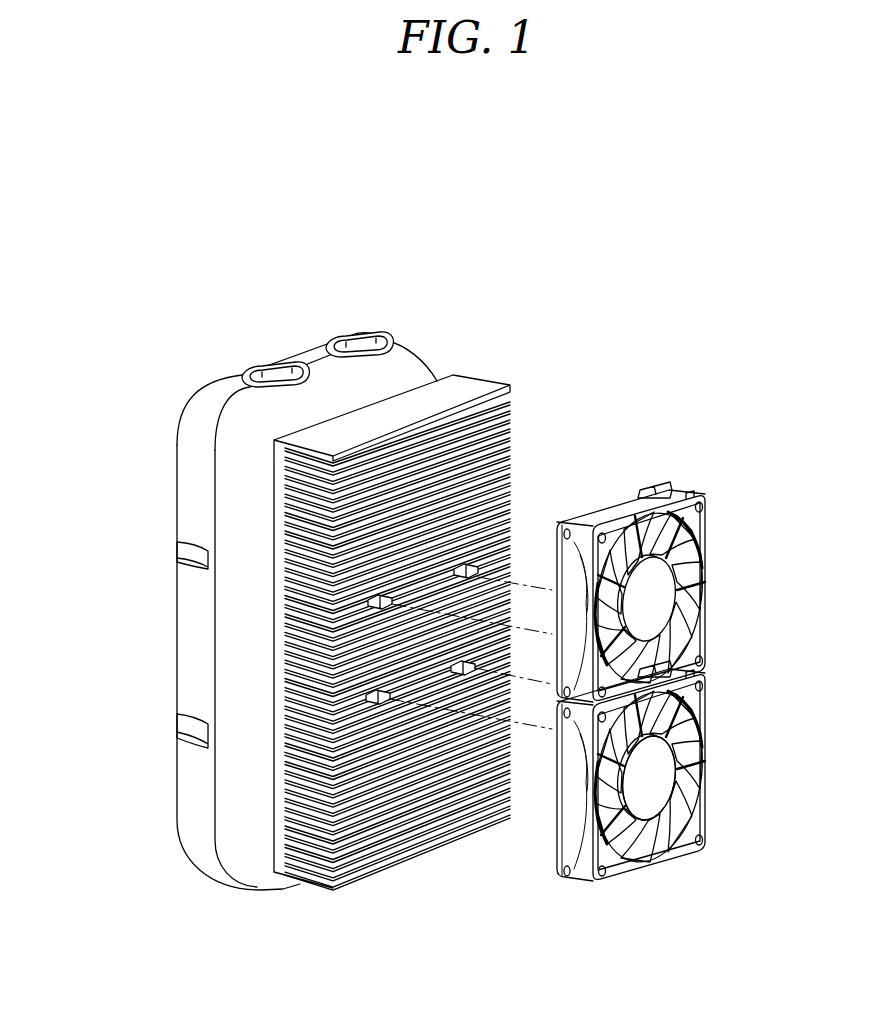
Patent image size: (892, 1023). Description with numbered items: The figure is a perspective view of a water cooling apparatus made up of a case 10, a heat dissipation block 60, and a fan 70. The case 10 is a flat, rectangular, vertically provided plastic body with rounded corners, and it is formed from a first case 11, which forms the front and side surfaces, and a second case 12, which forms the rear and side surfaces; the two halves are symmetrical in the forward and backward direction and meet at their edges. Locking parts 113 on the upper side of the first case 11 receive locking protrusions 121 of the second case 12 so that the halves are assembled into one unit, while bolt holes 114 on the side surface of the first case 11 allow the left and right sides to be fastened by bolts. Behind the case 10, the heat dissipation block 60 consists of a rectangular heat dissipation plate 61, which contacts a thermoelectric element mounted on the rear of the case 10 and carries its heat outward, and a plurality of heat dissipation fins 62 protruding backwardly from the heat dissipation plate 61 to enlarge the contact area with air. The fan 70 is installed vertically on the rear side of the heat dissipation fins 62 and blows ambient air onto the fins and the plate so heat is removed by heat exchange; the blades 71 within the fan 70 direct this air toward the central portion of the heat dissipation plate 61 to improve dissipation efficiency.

The case 10 is at (342, 263).
The first case 11 is at (292, 360).
The second case 12 is at (320, 373).
The locking part 113 is at (287, 368).
The locking protrusion 121 is at (371, 336).
The bolt hole 114 is at (177, 725).
The heat dissipation block 60 is at (104, 413).
The heat dissipation plate 61 is at (322, 443).
The heat dissipation fin 62 is at (280, 482).
The fan 70 is at (703, 521).
The blade 71 is at (656, 722).